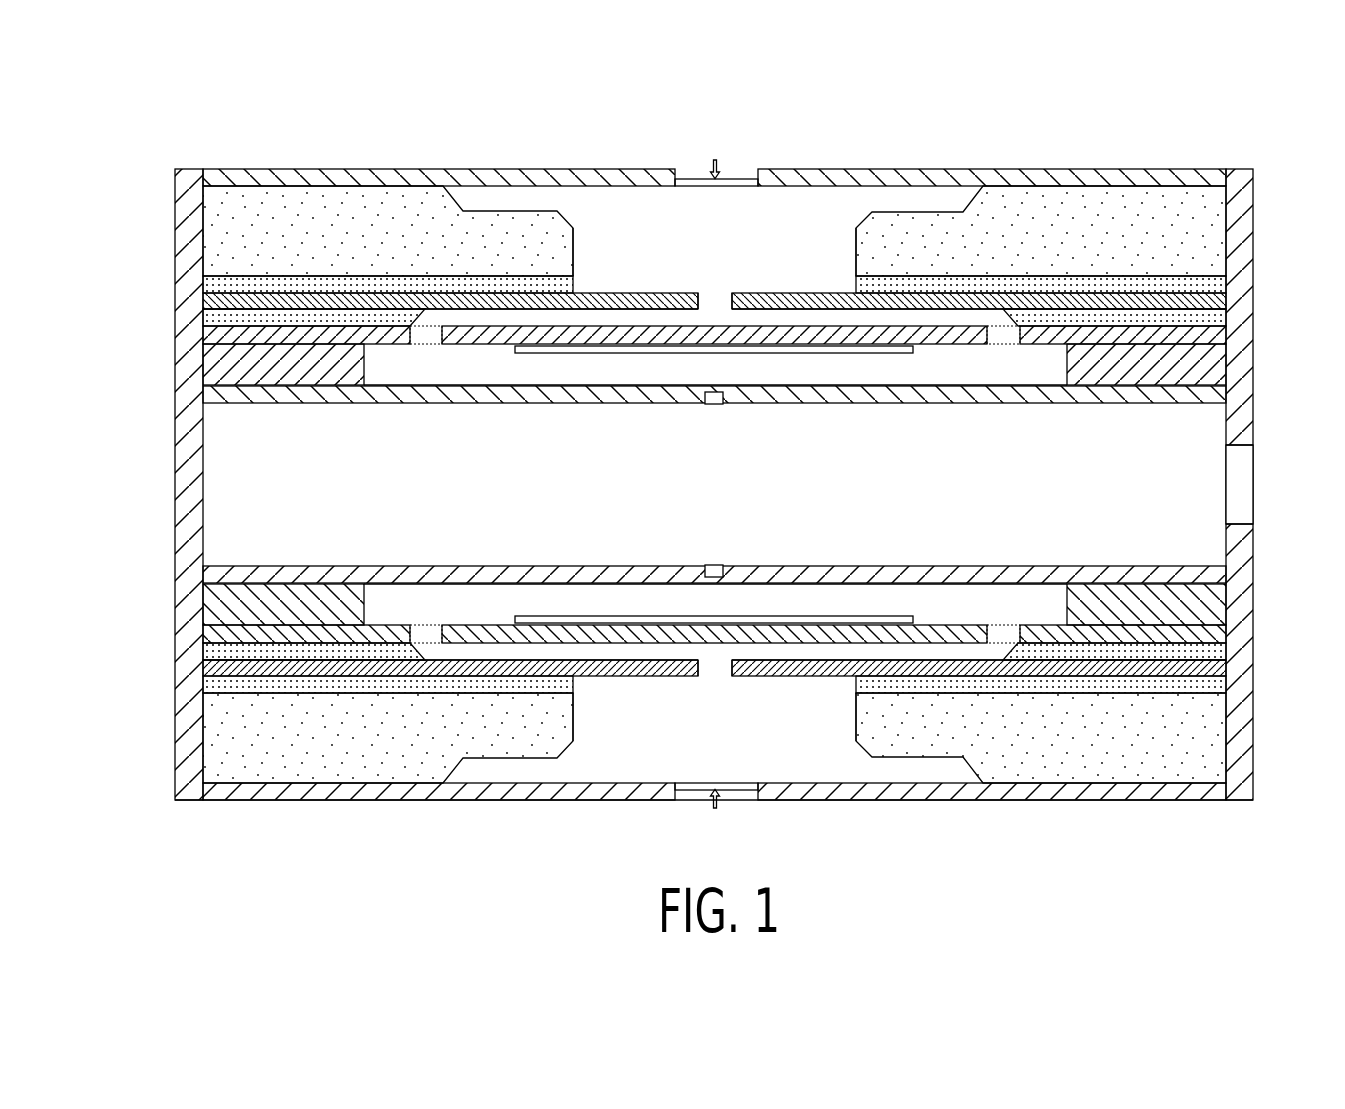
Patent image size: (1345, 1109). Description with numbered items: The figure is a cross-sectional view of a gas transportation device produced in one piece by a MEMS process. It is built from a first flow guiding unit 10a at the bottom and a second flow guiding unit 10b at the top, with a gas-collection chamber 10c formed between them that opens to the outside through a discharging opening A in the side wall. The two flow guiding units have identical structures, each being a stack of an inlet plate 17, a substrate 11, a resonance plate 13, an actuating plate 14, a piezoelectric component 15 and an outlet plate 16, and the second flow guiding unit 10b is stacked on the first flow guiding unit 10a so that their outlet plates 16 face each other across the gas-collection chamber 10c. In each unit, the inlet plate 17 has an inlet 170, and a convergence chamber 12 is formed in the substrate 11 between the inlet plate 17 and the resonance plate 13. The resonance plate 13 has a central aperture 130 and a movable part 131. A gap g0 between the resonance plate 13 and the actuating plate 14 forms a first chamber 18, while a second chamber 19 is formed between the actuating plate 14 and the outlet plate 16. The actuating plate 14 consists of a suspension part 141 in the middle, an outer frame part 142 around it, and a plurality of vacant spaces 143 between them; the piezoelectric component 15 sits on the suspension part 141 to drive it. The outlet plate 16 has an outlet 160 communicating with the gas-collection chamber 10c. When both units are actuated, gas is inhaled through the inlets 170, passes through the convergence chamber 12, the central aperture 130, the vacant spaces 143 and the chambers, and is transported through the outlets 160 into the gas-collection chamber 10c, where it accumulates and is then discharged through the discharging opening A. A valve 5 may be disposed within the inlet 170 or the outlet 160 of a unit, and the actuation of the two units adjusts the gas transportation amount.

The first flow guiding unit 10a is at (257, 799).
The second flow guiding unit 10b is at (217, 167).
The gas-collection chamber 10c is at (1212, 542).
The discharging opening A is at (1233, 478).
The valve 5 is at (760, 180).
The substrate 11 is at (230, 226).
The convergence chamber 12 is at (647, 228).
The resonance plate 13 is at (205, 298).
The movable part 131 is at (620, 292).
The central aperture 130 is at (710, 290).
The first chamber 18 is at (778, 310).
The gap g0 is at (222, 318).
The actuating plate 14 is at (212, 337).
The suspension part 141 is at (930, 344).
The outer frame part 142 is at (325, 345).
The vacant spaces 143 is at (427, 344).
The piezoelectric component 15 is at (527, 353).
The outlet plate 16 is at (222, 396).
The outlet 160 is at (713, 404).
The inlet plate 17 is at (215, 180).
The inlet 170 is at (752, 172).
The second chamber 19 is at (820, 380).